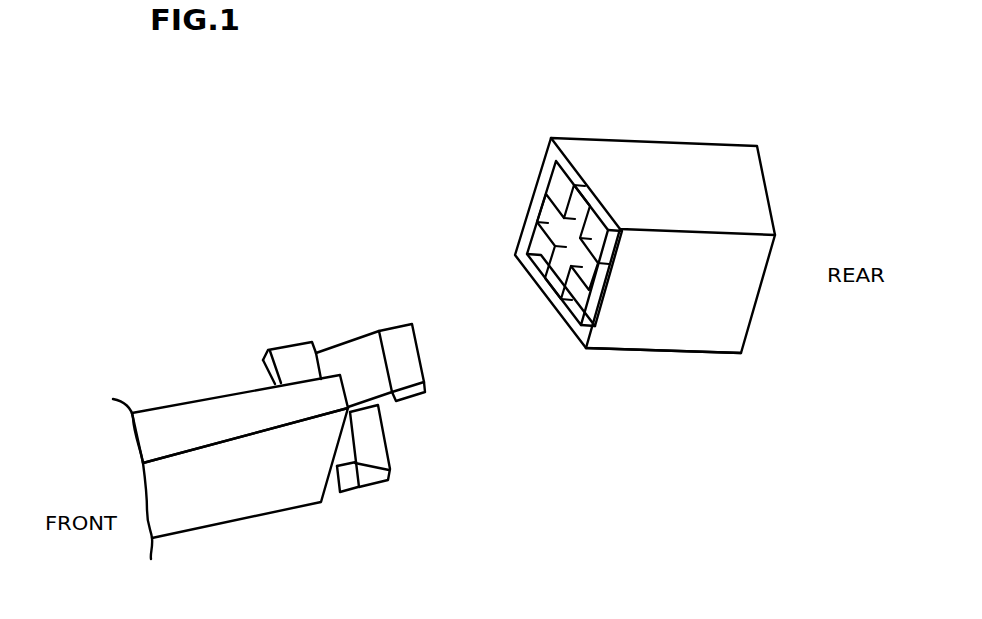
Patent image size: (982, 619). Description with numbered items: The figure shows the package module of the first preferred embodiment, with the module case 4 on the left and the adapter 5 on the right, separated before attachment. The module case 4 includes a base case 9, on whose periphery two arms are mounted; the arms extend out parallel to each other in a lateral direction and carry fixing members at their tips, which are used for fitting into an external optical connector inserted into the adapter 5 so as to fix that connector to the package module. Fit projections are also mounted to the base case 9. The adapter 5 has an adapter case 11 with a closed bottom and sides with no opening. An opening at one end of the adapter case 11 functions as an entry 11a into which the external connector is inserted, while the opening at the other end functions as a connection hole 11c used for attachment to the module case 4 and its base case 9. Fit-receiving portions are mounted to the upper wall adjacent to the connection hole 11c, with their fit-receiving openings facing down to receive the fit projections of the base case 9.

The module case 4 is at (355, 396).
The adapter 5 is at (632, 203).
The base case 9 is at (225, 512).
The adapter case 11 is at (681, 245).
The entry 11a is at (752, 320).
The connection hole 11c is at (532, 225).